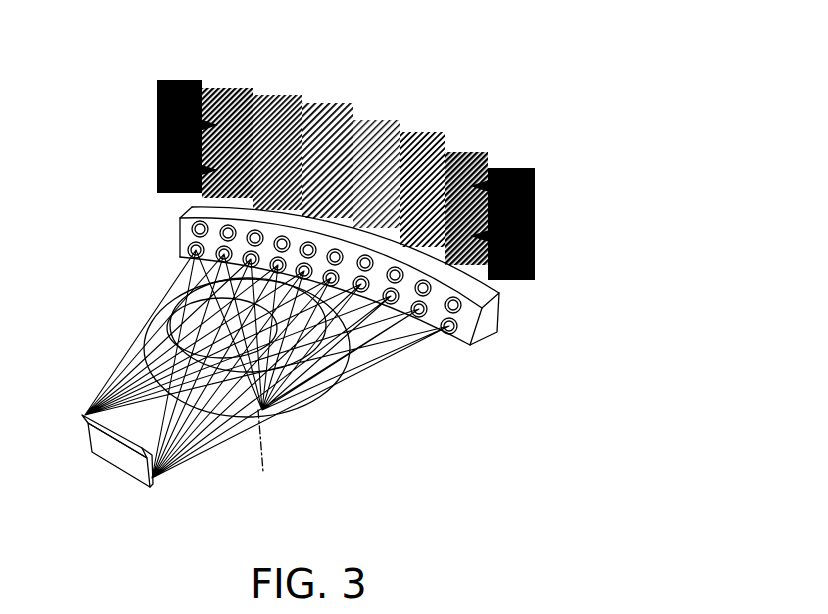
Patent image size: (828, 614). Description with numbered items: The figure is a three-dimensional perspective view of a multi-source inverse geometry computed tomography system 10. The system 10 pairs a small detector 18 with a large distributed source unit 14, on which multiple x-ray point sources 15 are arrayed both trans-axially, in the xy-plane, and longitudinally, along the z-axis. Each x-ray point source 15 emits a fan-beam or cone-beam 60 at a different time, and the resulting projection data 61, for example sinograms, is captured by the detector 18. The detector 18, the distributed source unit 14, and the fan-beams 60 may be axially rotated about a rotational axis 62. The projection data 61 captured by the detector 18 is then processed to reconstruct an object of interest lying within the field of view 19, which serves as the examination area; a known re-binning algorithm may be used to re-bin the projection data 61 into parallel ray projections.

The multi-source inverse geometry computed tomography system 10 is at (615, 72).
The distributed source unit 14 is at (499, 293).
The x-ray point sources 15 is at (180, 220).
The detector 18 is at (137, 465).
The field of view 19 is at (322, 397).
The fan-beam 60 is at (403, 347).
The projection data 61 is at (550, 203).
The rotational axis 62 is at (148, 316).